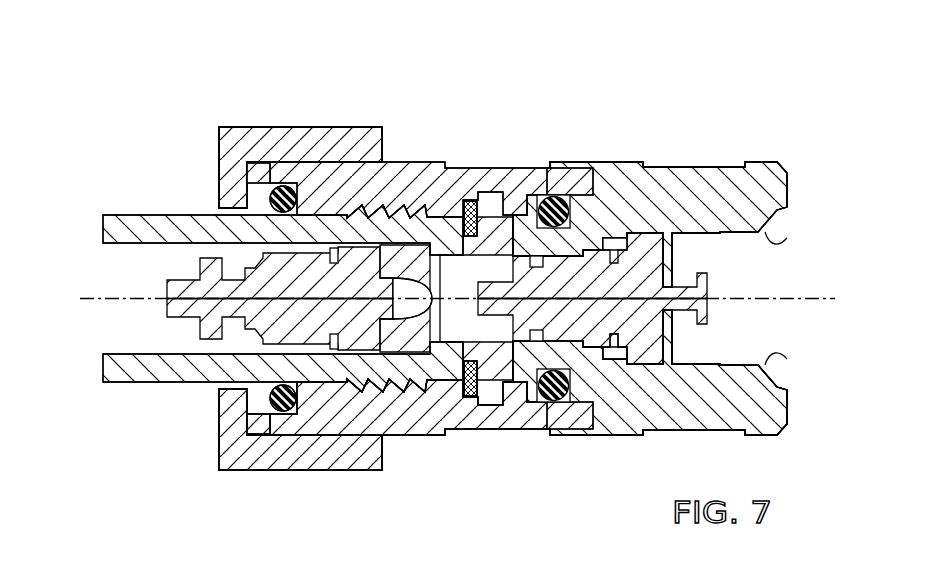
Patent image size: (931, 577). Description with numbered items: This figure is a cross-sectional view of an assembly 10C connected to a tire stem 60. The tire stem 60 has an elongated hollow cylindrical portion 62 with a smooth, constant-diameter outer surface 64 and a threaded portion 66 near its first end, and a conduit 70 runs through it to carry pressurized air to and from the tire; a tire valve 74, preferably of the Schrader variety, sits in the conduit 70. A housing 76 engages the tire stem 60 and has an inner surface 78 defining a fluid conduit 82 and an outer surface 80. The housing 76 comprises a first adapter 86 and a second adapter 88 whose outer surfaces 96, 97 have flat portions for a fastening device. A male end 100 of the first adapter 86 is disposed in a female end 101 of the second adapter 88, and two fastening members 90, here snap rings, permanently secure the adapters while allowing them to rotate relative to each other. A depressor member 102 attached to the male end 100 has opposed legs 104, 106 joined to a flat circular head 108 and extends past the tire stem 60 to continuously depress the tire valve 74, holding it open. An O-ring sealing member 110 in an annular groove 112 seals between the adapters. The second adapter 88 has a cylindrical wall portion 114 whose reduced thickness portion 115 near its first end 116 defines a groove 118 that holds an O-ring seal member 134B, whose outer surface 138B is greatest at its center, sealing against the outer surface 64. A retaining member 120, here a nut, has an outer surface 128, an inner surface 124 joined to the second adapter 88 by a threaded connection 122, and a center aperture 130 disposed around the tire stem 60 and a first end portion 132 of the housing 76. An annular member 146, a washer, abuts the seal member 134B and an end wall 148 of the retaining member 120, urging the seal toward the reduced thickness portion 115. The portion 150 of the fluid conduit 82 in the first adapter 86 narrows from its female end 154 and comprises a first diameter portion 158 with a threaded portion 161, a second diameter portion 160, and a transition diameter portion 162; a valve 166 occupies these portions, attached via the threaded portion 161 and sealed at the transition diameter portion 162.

The assembly 10C is at (128, 81).
The tire stem 60 is at (112, 384).
The cylindrical portion 62 is at (103, 383).
The outer surface 64 is at (120, 215).
The threaded portion 66 is at (395, 168).
The conduit 70 is at (122, 273).
The tire valve 74 is at (167, 304).
The housing 76 is at (762, 162).
The inner surface 78 is at (763, 237).
The outer surface 80 is at (525, 168).
The fluid conduit 82 is at (724, 278).
The first adapter 86 is at (775, 192).
The second adapter 88 is at (352, 388).
The fastening member 90 is at (470, 201).
The outer surface 96 is at (500, 432).
The outer surface 97 is at (482, 205).
The male end 100 is at (468, 398).
The female end 101 is at (603, 433).
The depressor member 102 is at (405, 400).
The leg 104 is at (405, 235).
The leg 106 is at (392, 360).
The flat circular head 108 is at (442, 168).
The sealing member 110 is at (548, 195).
The annular groove 112 is at (613, 175).
The wall portion 114 is at (428, 390).
The reduced thickness portion 115 is at (328, 165).
The first end 116 is at (301, 175).
The groove 118 is at (345, 168).
The retaining member 120 is at (241, 127).
The threaded connection 122 is at (278, 440).
The inner surface 124 is at (252, 445).
The outer surface 128 is at (232, 470).
The center aperture 130 is at (230, 212).
The first end portion 132 is at (333, 425).
The seal member 134B is at (270, 430).
The outer surface 138B is at (240, 190).
The annular member 146 is at (256, 407).
The end wall 148 is at (262, 420).
The portion of the fluid conduit 150 is at (468, 277).
The female end 154 is at (787, 400).
The first diameter portion 158 is at (663, 433).
The second diameter portion 160 is at (530, 433).
The threaded portion 161 is at (637, 433).
The transition diameter portion 162 is at (615, 433).
The valve 166 is at (635, 243).